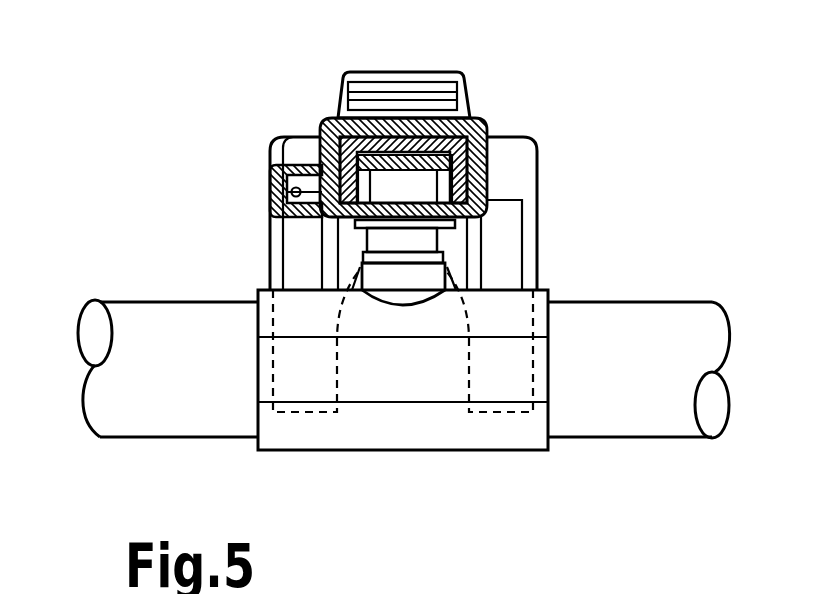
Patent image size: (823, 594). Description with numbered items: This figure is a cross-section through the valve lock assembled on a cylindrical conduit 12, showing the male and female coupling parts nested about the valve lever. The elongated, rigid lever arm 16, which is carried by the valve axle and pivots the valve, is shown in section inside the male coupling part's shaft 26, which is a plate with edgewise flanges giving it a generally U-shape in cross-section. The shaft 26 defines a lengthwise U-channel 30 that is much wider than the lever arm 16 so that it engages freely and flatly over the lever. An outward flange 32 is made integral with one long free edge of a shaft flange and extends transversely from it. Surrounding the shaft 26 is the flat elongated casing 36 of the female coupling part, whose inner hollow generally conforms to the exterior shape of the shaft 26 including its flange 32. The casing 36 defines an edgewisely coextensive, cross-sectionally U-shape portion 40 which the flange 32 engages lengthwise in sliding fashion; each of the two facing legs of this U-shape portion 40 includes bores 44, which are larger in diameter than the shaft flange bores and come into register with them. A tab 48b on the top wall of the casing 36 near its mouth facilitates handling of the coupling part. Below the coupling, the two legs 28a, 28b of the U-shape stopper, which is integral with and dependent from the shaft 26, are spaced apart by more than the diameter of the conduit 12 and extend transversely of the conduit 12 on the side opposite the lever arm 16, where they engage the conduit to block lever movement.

The cylindrical conduit 12 is at (190, 388).
The lever arm 16 is at (407, 177).
The shaft 26 is at (480, 133).
The stopper leg 28a is at (513, 553).
The stopper leg 28b is at (292, 412).
The U-channel 30 is at (322, 120).
The outward flange 32 is at (270, 210).
The casing 36 is at (400, 125).
The U-shape portion 40 is at (270, 190).
The casing bores 44 is at (285, 137).
The tab 48b is at (438, 88).